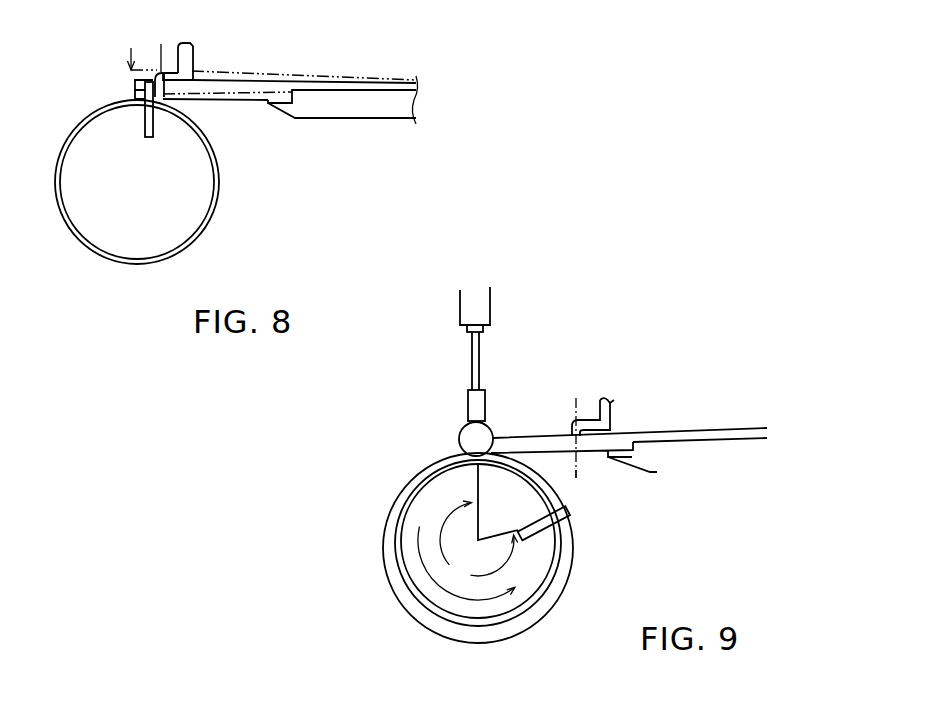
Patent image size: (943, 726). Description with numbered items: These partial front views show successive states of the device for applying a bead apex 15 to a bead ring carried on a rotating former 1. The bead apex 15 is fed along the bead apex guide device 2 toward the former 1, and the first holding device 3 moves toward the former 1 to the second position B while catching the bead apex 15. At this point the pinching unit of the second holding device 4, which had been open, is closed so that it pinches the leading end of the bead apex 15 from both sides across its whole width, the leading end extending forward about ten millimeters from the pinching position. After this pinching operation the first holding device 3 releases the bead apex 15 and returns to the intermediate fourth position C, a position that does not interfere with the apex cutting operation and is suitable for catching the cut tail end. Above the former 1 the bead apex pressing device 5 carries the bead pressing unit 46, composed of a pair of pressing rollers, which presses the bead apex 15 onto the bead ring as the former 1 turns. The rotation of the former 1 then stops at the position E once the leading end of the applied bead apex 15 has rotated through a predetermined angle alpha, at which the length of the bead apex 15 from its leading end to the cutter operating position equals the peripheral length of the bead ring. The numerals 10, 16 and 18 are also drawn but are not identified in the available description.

In FIG. 8, the former 1 is at (185, 207).
In FIG. 9, the former 1 is at (530, 557).
In FIG. 8, the bead apex guide device 2 is at (373, 121).
In FIG. 9, the bead apex guide device 2 is at (732, 447).
In FIG. 8, the first holding device 3 is at (197, 65).
In FIG. 9, the first holding device 3 is at (590, 415).
In FIG. 8, the second holding device 4 is at (143, 122).
In FIG. 9, the second holding device 4 is at (548, 537).
In FIG. 9, the bead apex pressing device 5 is at (466, 402).
In FIG. 8, the ring 10 is at (218, 187).
In FIG. 9, the ring 10 is at (392, 522).
In FIG. 8, the bead apex 15 is at (320, 87).
In FIG. 9, the bead apex 15 is at (675, 435).
In FIG. 9, the eccentric ring 16 is at (413, 490).
In FIG. 8, the stop member 18 is at (165, 75).
In FIG. 9, the bead pressing unit 46 is at (462, 432).
In FIG. 8, the second position B is at (146, 47).
In FIG. 9, the intermediate fourth position C is at (571, 428).
In FIG. 9, the stop position E is at (567, 485).